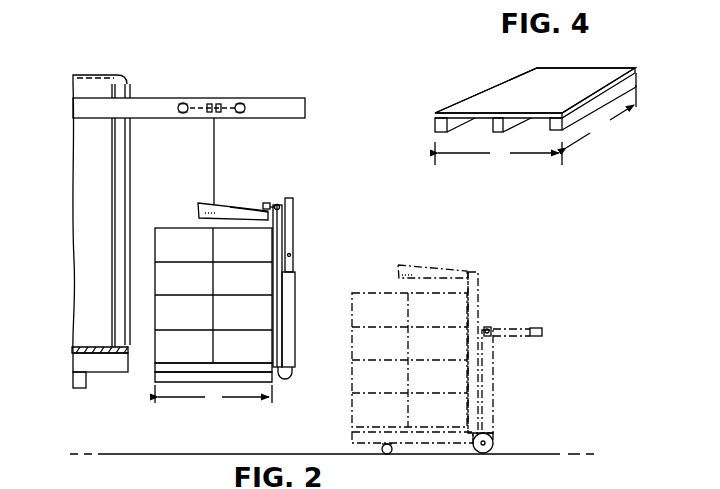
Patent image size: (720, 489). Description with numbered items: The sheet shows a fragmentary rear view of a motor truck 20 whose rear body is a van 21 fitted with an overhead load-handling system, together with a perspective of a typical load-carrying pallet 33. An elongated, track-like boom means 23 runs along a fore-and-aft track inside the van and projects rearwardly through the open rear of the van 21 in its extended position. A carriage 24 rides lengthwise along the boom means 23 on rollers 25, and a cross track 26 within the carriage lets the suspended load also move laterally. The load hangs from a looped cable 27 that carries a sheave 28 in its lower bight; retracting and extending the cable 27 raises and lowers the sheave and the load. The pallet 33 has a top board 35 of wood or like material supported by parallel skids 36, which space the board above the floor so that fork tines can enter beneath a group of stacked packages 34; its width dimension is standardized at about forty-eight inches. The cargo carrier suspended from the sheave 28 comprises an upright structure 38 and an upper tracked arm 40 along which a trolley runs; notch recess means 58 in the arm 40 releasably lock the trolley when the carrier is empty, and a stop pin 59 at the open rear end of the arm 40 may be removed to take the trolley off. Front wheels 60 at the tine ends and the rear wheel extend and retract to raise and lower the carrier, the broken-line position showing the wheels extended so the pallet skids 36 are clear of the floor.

In FIG. 2, the motor truck 20 is at (72, 385).
In FIG. 2, the van 21 is at (80, 328).
In FIG. 2, the boom means 23 is at (290, 100).
In FIG. 2, the carriage 24 is at (202, 103).
In FIG. 2, the rollers 25 is at (183, 103).
In FIG. 2, the cross track 26 is at (221, 103).
In FIG. 2, the looped cable 27 is at (218, 137).
In FIG. 2, the sheave 28 is at (213, 205).
In FIG. 2, the pallet 33 is at (152, 378).
In FIG. 4, the pallet 33 is at (576, 66).
In FIG. 2, the packages 34 is at (166, 231).
In FIG. 2, the top board 35 is at (236, 363).
In FIG. 4, the top board 35 is at (500, 92).
In FIG. 2, the skids 36 is at (266, 377).
In FIG. 4, the skids 36 is at (434, 126).
In FIG. 2, the upright structure 38 is at (284, 312).
In FIG. 2, the arm 40 is at (236, 208).
In FIG. 2, the notch recess means 58 is at (268, 203).
In FIG. 2, the stop pin 59 is at (279, 205).
In FIG. 2, the front wheels 60 is at (387, 454).